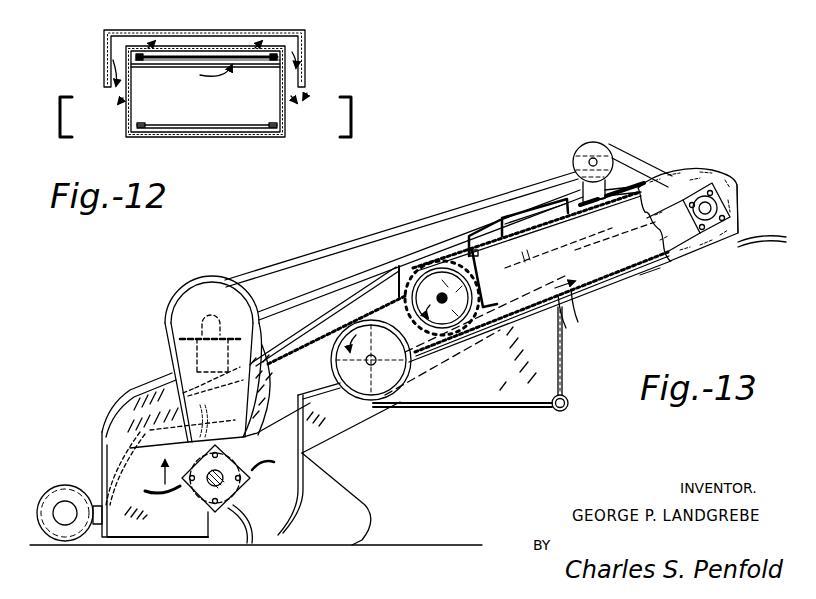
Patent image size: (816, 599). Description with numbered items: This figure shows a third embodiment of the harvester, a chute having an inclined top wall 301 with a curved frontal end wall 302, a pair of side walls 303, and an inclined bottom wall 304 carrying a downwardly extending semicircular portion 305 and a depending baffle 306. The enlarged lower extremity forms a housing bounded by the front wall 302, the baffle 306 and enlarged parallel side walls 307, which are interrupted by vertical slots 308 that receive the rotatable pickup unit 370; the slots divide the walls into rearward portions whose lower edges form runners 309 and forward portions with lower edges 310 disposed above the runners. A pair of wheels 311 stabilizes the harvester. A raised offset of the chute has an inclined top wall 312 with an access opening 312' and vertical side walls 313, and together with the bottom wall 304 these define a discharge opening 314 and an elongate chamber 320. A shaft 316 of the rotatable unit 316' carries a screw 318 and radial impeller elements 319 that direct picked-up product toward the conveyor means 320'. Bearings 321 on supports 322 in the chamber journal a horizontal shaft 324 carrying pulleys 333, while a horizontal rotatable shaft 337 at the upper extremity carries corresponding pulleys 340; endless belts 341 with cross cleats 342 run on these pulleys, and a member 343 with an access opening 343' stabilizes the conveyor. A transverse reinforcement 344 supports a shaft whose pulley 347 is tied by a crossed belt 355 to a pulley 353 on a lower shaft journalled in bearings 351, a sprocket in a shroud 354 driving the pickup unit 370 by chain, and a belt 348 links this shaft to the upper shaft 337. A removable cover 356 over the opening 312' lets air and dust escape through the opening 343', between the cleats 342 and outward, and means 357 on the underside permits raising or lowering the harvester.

In FIG. 13, the inclined top wall 301 is at (305, 332).
In FIG. 13, the curved frontal end wall 302 is at (127, 443).
In FIG. 13, the side walls 303 is at (290, 362).
In FIG. 12, the inclined bottom wall 304 is at (267, 137).
In FIG. 13, the inclined bottom wall 304 is at (623, 290).
In FIG. 13, the semicircular portion 305 is at (360, 420).
In FIG. 13, the depending baffle 306 is at (303, 516).
In FIG. 13, the enlarged side walls 307 is at (147, 460).
In FIG. 13, the vertical slots 308 is at (215, 540).
In FIG. 13, the runners 309 is at (333, 543).
In FIG. 13, the lower edges 310 is at (148, 537).
In FIG. 13, the wheels 311 is at (67, 488).
In FIG. 12, the inclined top wall of offset 312 is at (184, 69).
In FIG. 13, the inclined top wall of offset 312 is at (688, 203).
In FIG. 12, the access opening 312' is at (204, 40).
In FIG. 13, the access opening 312' is at (532, 187).
In FIG. 12, the vertical side walls of offset 313 is at (127, 117).
In FIG. 13, the vertical side walls of offset 313 is at (648, 275).
In FIG. 13, the discharge opening 314 is at (733, 181).
In FIG. 13, the rotatable shaft 316 is at (381, 373).
In FIG. 13, the rotatable unit 316' is at (315, 304).
In FIG. 13, the screw 318 is at (417, 377).
In FIG. 13, the impeller elements 319 is at (330, 376).
In FIG. 13, the elongate chamber 320 is at (540, 277).
In FIG. 13, the conveyor means 320' is at (422, 213).
In FIG. 13, the bearings 321 is at (392, 270).
In FIG. 13, the supports 322 is at (485, 290).
In FIG. 13, the horizontal shaft 324 is at (397, 297).
In FIG. 13, the pulleys 333 is at (432, 273).
In FIG. 13, the horizontal rotatable shaft 337 is at (718, 206).
In FIG. 13, the pulleys 340 is at (697, 262).
In FIG. 12, the endless belts 341 is at (145, 123).
In FIG. 13, the endless belts 341 is at (476, 250).
In FIG. 12, the cross cleats 342 is at (227, 55).
In FIG. 13, the cross cleats 342 is at (573, 313).
In FIG. 12, the member 343 is at (243, 70).
In FIG. 13, the member 343 is at (615, 236).
In FIG. 12, the access opening 343' is at (207, 79).
In FIG. 13, the access opening 343' is at (559, 249).
In FIG. 13, the transverse reinforcement 344 is at (643, 177).
In FIG. 13, the pulley 347 is at (590, 142).
In FIG. 13, the belt 348 is at (623, 153).
In FIG. 13, the bearings 351 is at (180, 316).
In FIG. 13, the pulley 353 is at (180, 293).
In FIG. 13, the shroud 354 is at (180, 362).
In FIG. 13, the crossed belt 355 is at (282, 264).
In FIG. 12, the removable cover 356 is at (272, 30).
In FIG. 13, the removable cover 356 is at (501, 222).
In FIG. 13, the means 357 is at (569, 405).
In FIG. 13, the rotatable pickup unit 370 is at (203, 490).